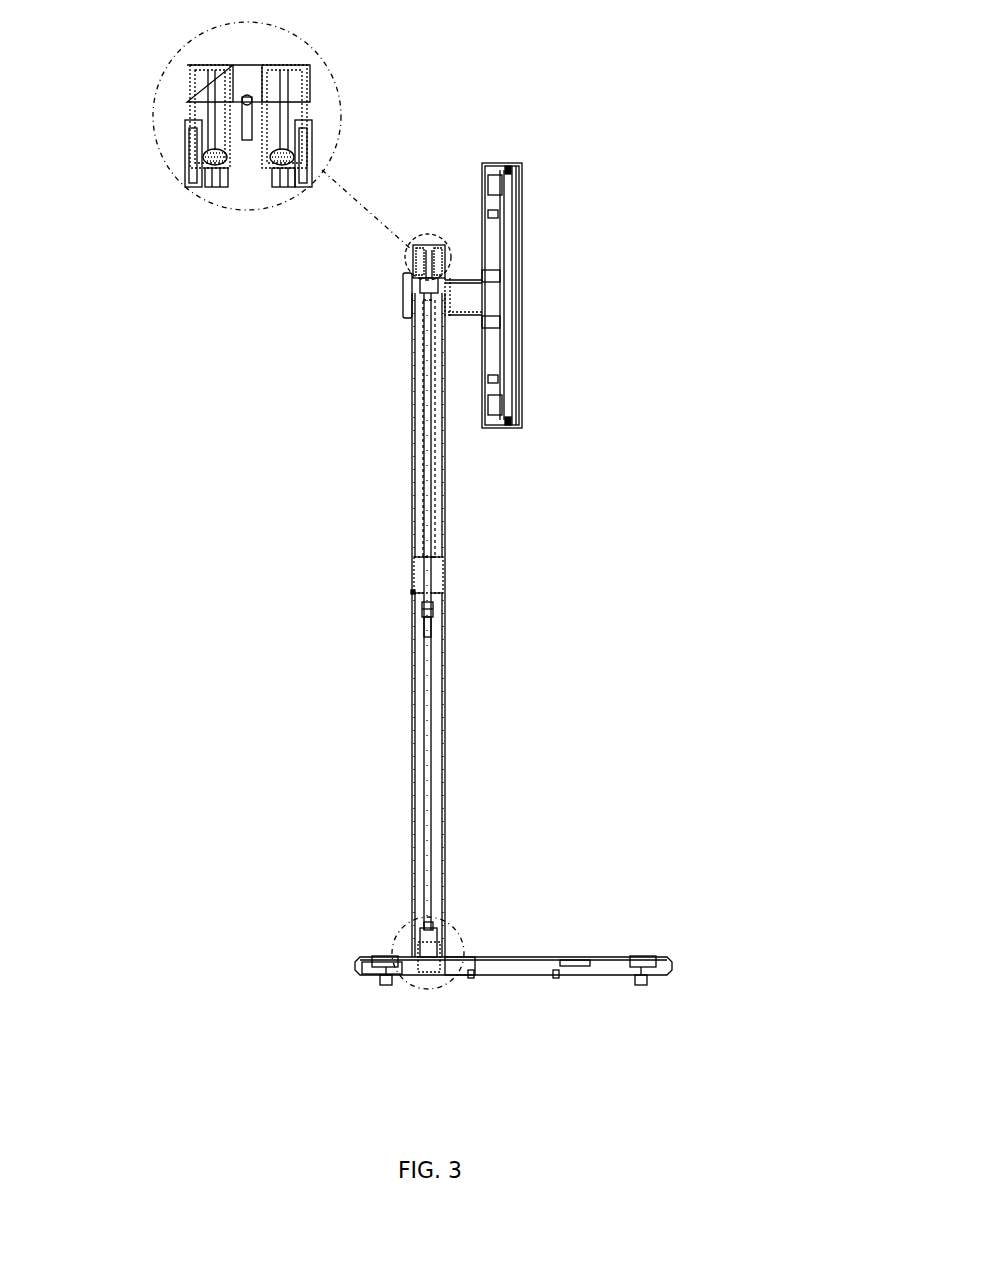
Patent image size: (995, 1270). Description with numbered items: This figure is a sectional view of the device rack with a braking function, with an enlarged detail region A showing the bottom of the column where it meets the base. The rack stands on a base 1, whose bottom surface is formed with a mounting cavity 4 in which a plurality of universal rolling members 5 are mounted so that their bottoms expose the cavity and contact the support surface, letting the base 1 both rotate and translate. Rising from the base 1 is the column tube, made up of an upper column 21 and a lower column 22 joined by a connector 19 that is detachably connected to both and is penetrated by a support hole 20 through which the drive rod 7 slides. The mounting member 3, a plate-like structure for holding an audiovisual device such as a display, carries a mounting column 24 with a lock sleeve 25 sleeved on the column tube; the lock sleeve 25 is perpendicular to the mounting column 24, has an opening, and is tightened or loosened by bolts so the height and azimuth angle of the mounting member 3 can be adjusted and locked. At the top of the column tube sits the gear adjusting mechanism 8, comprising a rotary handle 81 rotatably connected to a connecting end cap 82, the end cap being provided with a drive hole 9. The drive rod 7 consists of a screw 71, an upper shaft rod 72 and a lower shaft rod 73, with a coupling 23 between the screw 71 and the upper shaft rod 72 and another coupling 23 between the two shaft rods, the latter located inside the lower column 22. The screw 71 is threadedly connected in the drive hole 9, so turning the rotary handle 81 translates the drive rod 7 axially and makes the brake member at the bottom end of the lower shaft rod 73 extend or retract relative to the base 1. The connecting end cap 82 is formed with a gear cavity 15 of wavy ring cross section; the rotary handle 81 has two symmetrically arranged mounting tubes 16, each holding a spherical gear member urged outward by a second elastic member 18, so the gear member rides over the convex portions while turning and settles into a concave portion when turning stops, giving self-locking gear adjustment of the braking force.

The base 1 is at (553, 957).
The mounting member 3 is at (482, 242).
The mounting cavity 4 is at (372, 973).
The universal rolling members 5 is at (650, 958).
The drive rod 7 is at (194, 337).
The gear adjusting mechanism 8 is at (428, 48).
The drive hole 9 is at (268, 197).
The gear cavity 15 is at (220, 152).
The mounting tubes 16 is at (267, 152).
The second elastic member 18 is at (195, 165).
The connector 19 is at (440, 571).
The support hole 20 is at (440, 592).
The upper column 21 is at (445, 505).
The lower column 22 is at (445, 702).
The coupling 23 is at (430, 608).
The mounting column 24 is at (460, 305).
The lock sleeve 25 is at (433, 322).
The screw 71 is at (418, 297).
The upper shaft rod 72 is at (442, 462).
The lower shaft rod 73 is at (432, 640).
The rotary handle 81 is at (287, 95).
The connecting end cap 82 is at (278, 160).
The detail A is at (458, 930).